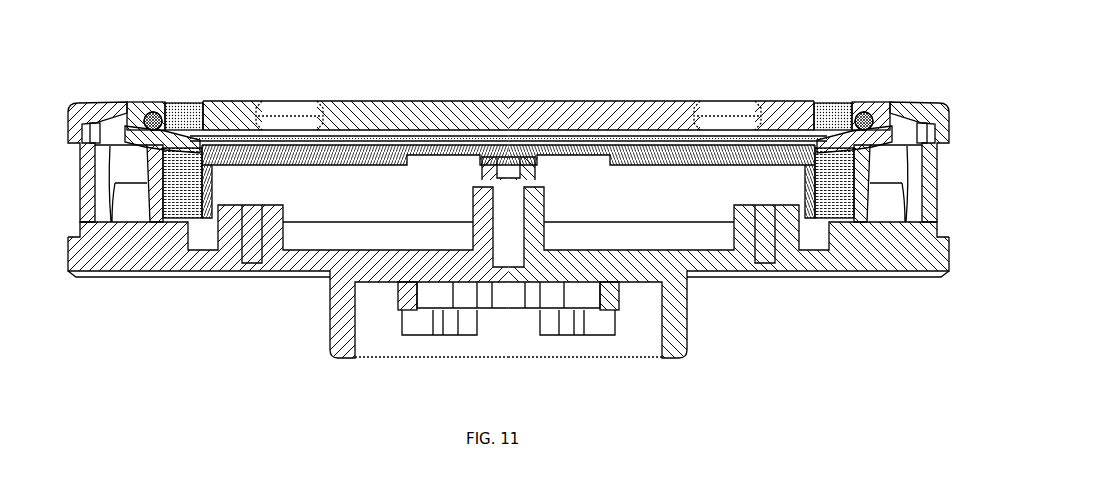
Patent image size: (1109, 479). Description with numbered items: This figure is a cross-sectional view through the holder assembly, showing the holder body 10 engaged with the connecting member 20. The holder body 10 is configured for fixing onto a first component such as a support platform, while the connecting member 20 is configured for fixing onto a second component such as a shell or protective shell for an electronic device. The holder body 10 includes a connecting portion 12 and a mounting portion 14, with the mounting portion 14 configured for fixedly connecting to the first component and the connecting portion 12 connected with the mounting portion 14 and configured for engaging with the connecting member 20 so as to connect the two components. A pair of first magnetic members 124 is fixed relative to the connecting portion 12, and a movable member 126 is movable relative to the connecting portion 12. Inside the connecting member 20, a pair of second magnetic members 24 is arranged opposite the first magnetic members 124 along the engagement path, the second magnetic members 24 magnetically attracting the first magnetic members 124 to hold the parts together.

The holder body 10 is at (757, 293).
The connecting portion 12 is at (935, 170).
The mounting portion 14 is at (508, 350).
The connecting member 20 is at (621, 101).
The second magnetic member 24 is at (190, 112).
The first magnetic member 124 is at (177, 197).
The movable member 126 is at (153, 112).